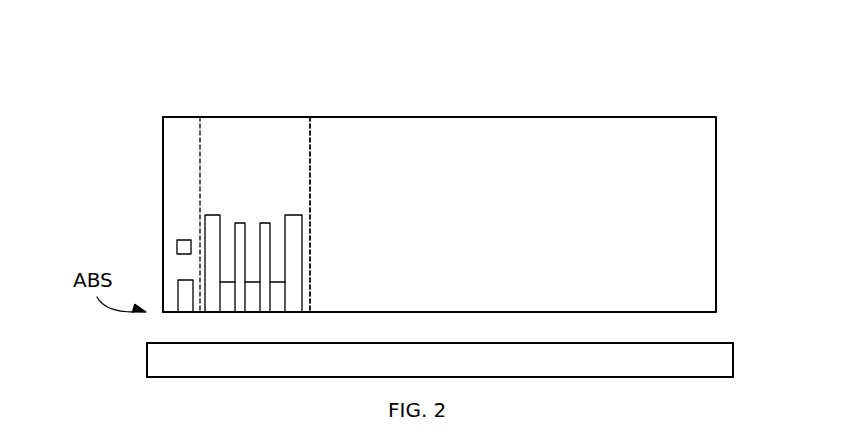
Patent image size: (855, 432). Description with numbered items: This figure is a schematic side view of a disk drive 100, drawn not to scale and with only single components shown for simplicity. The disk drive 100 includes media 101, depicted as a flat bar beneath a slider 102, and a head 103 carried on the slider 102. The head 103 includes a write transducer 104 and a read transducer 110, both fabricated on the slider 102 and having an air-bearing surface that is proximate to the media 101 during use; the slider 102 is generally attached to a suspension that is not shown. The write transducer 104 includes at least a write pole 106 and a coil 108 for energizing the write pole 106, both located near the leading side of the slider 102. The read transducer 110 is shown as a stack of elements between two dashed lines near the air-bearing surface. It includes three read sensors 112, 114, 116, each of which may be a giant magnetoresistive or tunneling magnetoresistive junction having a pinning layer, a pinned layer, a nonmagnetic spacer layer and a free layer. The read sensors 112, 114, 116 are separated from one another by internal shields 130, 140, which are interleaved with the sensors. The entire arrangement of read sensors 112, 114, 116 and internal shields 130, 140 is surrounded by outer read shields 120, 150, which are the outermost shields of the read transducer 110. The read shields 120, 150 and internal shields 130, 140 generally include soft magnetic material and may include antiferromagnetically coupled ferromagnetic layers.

The disk drive 100 is at (445, 30).
The media 101 is at (147, 363).
The slider 102 is at (716, 182).
The head 103 is at (53, 188).
The write transducer 104 is at (163, 167).
The write pole 106 is at (179, 280).
The coil 108 is at (178, 240).
The read transducer 110 is at (310, 150).
The read sensor 112 is at (230, 312).
The read sensor 114 is at (253, 282).
The read sensor 116 is at (280, 312).
The read shield 120 is at (212, 215).
The shield 130 is at (240, 223).
The shield 140 is at (265, 223).
The read shield 150 is at (302, 232).